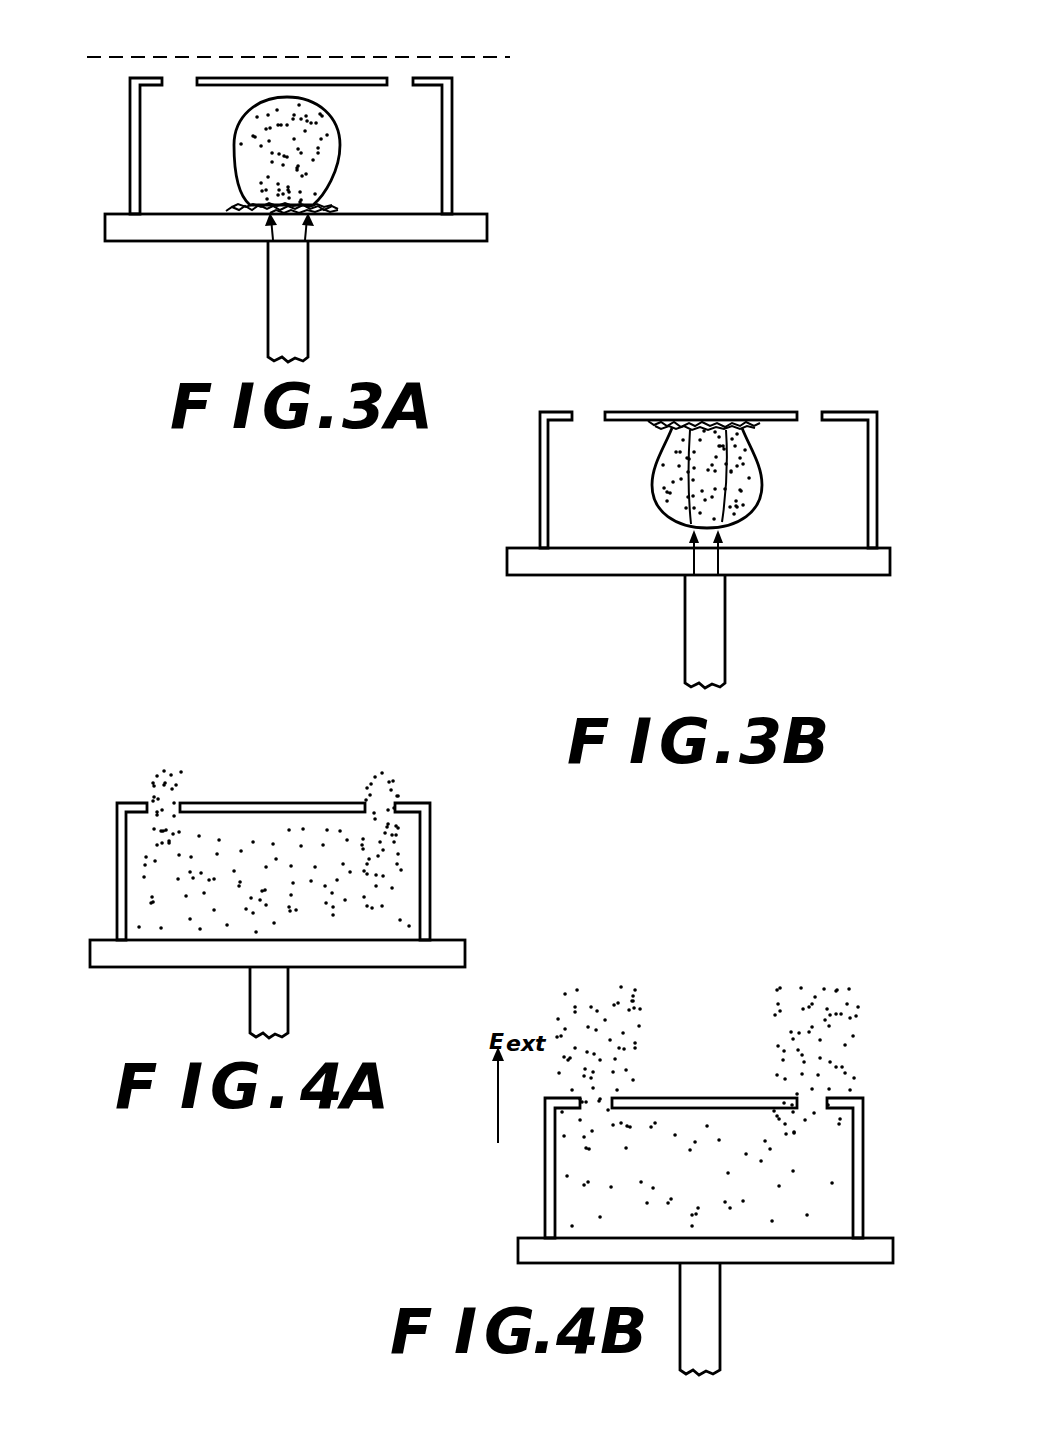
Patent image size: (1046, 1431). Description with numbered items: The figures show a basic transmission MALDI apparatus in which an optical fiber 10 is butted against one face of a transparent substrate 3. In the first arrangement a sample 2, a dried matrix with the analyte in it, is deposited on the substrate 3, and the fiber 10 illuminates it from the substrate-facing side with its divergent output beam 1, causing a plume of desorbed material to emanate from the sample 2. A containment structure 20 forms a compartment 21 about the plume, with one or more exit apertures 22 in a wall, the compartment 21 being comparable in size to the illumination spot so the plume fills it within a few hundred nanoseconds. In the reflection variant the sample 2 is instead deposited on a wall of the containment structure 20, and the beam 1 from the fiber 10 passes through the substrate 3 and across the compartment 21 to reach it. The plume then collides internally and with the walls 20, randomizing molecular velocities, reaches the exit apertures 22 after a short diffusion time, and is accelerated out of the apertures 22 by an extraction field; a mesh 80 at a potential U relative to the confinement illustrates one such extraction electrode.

In FIG. 3A, the divergent output beam 1 is at (265, 236).
In FIG. 3B, the divergent output beam 1 is at (690, 578).
In FIG. 3A, the sample 2 is at (326, 206).
In FIG. 3B, the sample 2 is at (761, 427).
In FIG. 3A, the transparent substrate 3 is at (455, 214).
In FIG. 3B, the transparent substrate 3 is at (877, 548).
In FIG. 4A, the transparent substrate 3 is at (196, 956).
In FIG. 4B, the transparent substrate 3 is at (642, 1255).
In FIG. 3A, the optical fiber 10 is at (308, 305).
In FIG. 3B, the optical fiber 10 is at (730, 643).
In FIG. 4A, the optical fiber 10 is at (288, 1003).
In FIG. 4B, the optical fiber 10 is at (720, 1310).
In FIG. 3A, the containment structure 20 is at (130, 161).
In FIG. 3B, the containment structure 20 is at (739, 412).
In FIG. 4A, the containment structure 20 is at (117, 874).
In FIG. 4B, the containment structure 20 is at (545, 1204).
In FIG. 3A, the compartment 21 is at (205, 175).
In FIG. 3B, the compartment 21 is at (830, 506).
In FIG. 3A, the exit apertures 22 is at (177, 79).
In FIG. 3A, the mesh 80 is at (481, 57).